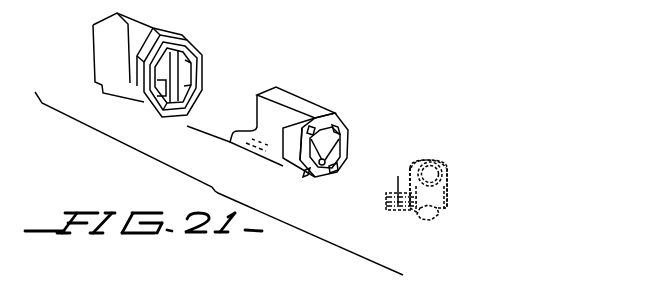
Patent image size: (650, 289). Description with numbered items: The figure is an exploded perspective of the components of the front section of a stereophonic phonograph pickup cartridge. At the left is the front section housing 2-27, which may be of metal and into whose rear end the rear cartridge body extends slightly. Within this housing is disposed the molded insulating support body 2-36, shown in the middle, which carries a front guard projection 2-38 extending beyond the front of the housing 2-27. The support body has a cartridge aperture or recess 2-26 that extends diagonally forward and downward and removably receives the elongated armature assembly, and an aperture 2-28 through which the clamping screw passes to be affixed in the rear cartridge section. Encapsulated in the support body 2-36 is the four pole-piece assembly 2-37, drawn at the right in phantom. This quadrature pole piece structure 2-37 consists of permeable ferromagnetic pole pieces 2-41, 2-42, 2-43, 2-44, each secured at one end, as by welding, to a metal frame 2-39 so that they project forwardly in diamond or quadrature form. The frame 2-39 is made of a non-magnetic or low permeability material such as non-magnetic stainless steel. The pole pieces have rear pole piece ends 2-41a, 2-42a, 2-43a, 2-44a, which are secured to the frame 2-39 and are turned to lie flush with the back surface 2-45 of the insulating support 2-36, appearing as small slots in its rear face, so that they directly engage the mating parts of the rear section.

The front section housing 2-27 is at (181, 26).
The molded insulating support body 2-36 is at (297, 86).
The aperture 2-28 is at (335, 114).
The cartridge aperture or recess 2-26 is at (311, 173).
The rear pole piece end 2-44a is at (312, 126).
The rear pole piece end 2-42a is at (340, 130).
The rear pole piece end 2-43a is at (334, 172).
The back surface 2-45 is at (307, 147).
The front guard projection 2-38 is at (243, 144).
The rear pole piece end 2-41a is at (305, 178).
The four pole-piece assembly 2-37 is at (444, 158).
The pole piece 2-42 is at (430, 200).
The pole piece 2-43 is at (452, 196).
The metal frame 2-39 is at (427, 221).
The pole piece 2-44 is at (425, 162).
The pole piece 2-41 is at (401, 212).